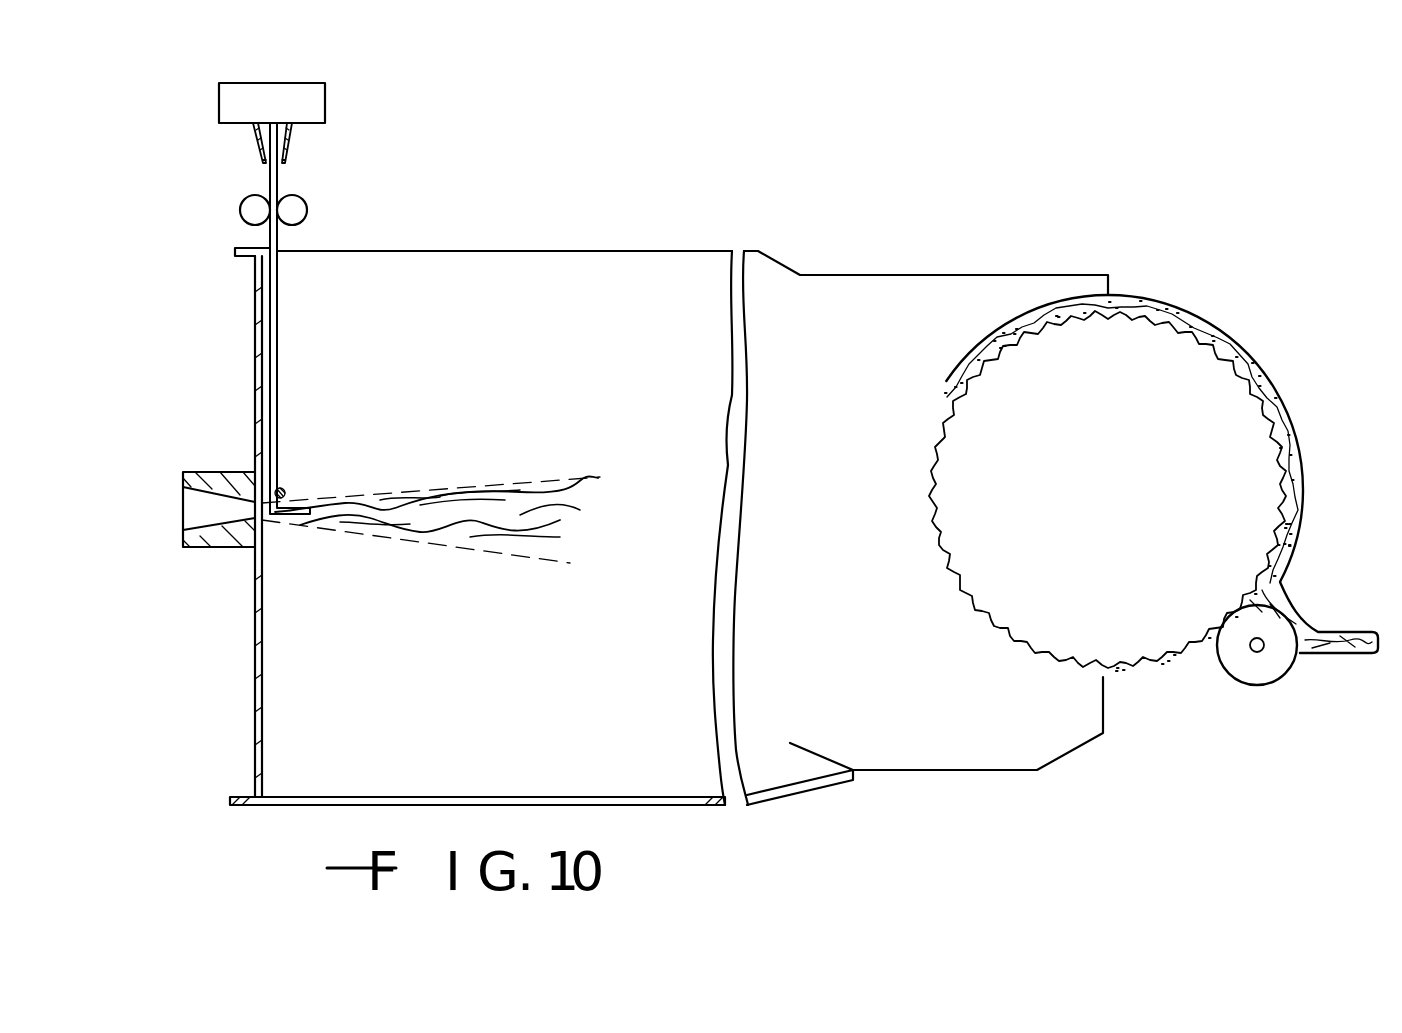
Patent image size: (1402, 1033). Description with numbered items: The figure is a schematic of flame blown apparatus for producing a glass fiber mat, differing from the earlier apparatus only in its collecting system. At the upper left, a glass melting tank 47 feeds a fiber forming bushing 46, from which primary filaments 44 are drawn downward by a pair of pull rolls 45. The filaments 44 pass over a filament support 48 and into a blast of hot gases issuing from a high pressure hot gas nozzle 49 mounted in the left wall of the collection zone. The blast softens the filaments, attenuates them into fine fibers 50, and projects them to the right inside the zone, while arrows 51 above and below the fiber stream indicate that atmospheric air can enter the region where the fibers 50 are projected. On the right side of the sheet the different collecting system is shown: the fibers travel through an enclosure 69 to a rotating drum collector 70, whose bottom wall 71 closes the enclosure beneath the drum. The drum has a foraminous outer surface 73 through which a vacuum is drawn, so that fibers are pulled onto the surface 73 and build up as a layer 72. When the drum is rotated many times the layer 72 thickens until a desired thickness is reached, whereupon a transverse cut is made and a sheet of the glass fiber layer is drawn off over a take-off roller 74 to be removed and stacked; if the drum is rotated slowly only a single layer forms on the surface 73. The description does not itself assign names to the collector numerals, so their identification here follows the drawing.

The primary filaments 44 is at (280, 182).
The pull rolls 45 is at (240, 206).
The fiber forming bushing 46 is at (292, 150).
The glass melting tank 47 is at (330, 104).
The filament support 48 is at (283, 489).
The high pressure hot gas nozzle 49 is at (183, 517).
The fine fibers 50 is at (598, 478).
The arrows 51 is at (364, 488).
The collection housing 69 is at (979, 260).
The collection drum 70 is at (1124, 485).
The housing bottom 71 is at (1007, 772).
The collected web layer 72 is at (1200, 327).
The drum surface 73 is at (963, 583).
The take-off roller 74 is at (1257, 685).